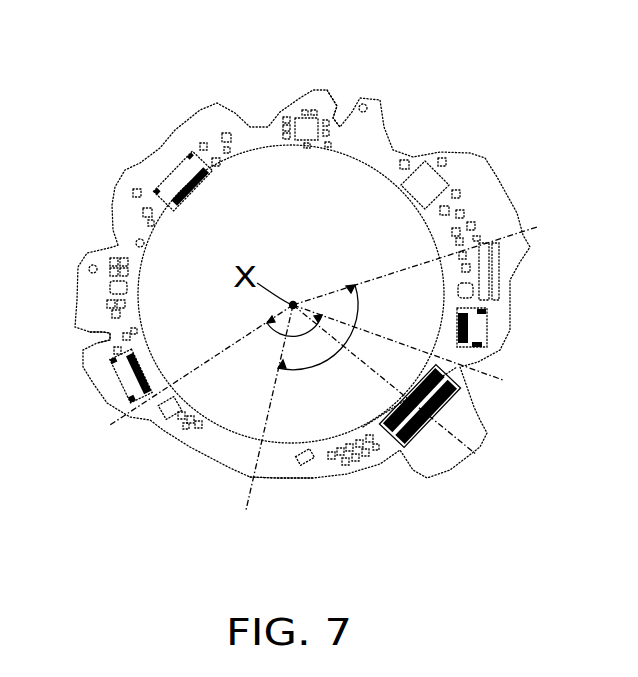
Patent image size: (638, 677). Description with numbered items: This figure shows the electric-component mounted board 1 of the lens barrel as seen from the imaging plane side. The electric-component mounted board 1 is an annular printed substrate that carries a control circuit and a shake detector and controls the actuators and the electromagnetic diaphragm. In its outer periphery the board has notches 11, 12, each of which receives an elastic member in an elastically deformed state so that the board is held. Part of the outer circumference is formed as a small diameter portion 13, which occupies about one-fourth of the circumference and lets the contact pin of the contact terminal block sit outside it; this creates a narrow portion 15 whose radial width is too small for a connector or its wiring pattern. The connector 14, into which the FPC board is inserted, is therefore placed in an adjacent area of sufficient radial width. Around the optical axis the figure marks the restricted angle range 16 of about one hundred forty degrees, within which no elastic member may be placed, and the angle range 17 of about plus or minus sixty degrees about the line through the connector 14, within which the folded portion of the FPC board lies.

The electric-component mounted board 1 is at (488, 327).
The notch 11 is at (337, 118).
The notch 12 is at (110, 335).
The small diameter portion 13 is at (277, 480).
The connector 14 is at (420, 400).
The narrow portion 15 is at (238, 447).
The restricted angle range 16 is at (295, 341).
The angle range 17 is at (318, 342).